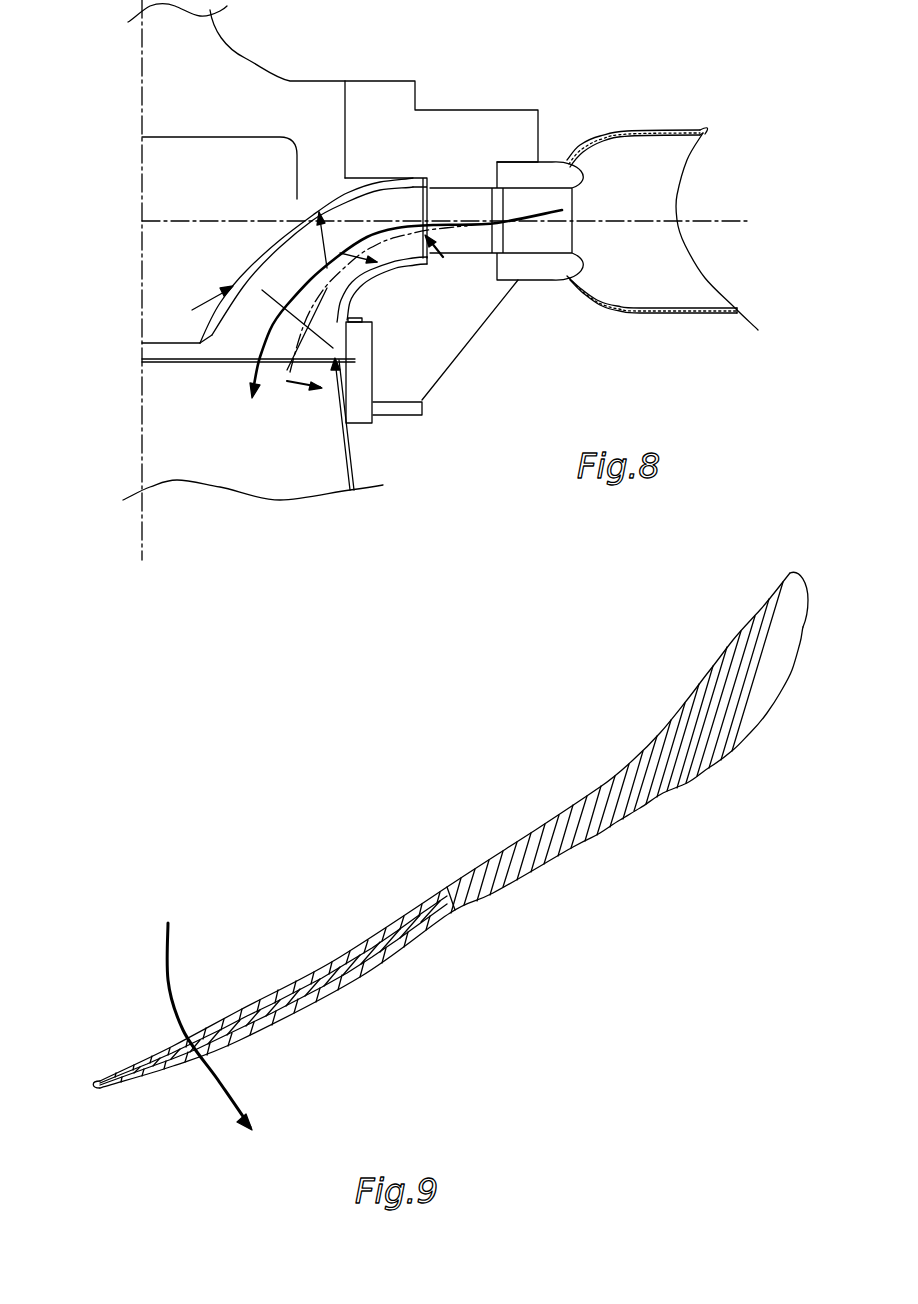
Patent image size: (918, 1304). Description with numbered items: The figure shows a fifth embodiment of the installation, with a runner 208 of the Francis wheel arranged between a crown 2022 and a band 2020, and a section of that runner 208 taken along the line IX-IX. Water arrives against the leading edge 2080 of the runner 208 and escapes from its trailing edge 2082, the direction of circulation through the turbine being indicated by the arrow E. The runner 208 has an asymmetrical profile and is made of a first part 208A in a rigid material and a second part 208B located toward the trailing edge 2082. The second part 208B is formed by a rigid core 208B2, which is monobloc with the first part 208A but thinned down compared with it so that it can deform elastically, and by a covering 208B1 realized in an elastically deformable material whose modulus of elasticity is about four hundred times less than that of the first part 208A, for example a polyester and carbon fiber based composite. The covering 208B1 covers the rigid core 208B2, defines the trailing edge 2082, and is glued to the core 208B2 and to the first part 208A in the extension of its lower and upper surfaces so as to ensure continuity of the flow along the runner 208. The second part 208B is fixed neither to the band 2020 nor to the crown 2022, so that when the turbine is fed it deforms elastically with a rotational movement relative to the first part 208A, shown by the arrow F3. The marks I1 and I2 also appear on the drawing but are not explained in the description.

In FIG. 9, the runner 208 is at (673, 845).
In FIG. 8, the first part of the runner 208A is at (380, 207).
In FIG. 9, the first part of the runner 208A is at (647, 750).
In FIG. 8, the second part of the runner 208B is at (262, 290).
In FIG. 9, the second part of the runner 208B is at (313, 990).
In FIG. 9, the covering 208B1 is at (387, 937).
In FIG. 9, the rigid core 208B2 is at (220, 1042).
In FIG. 8, the band 2020 is at (367, 262).
In FIG. 8, the crown 2022 is at (327, 270).
In FIG. 9, the leading edge 2080 is at (797, 570).
In FIG. 9, the trailing edge 2082 is at (97, 1088).
In FIG. 8, the arrows showing water circulation direction E is at (397, 312).
In FIG. 9, the arrow showing rotational movement F3 is at (220, 1035).
In FIG. 8, the first interface I1 is at (334, 362).
In FIG. 8, the second interface I2 is at (192, 310).
In FIG. 8, the section line IX- IX is at (371, 324).